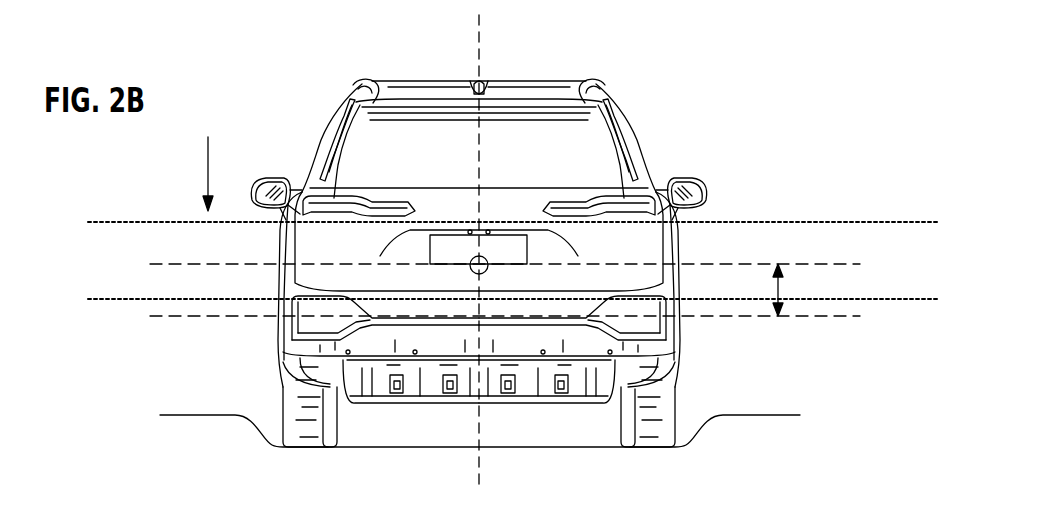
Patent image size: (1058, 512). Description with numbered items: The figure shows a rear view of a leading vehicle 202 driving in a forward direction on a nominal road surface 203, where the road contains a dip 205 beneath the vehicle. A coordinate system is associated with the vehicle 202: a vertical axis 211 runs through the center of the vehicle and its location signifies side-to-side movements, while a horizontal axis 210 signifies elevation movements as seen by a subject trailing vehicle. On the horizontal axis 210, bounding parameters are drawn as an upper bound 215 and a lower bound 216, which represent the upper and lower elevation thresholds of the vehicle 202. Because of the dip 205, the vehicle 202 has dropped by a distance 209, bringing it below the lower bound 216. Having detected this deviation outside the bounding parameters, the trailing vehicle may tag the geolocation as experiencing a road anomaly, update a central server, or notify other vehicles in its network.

The vehicle 202 is at (563, 84).
The road 203 is at (191, 415).
The dip 205 is at (378, 448).
The distance 209 is at (780, 287).
The horizontal axis 210 is at (721, 263).
The vertical axis 211 is at (480, 48).
The upper bound 215 is at (902, 222).
The lower bound 216 is at (902, 299).